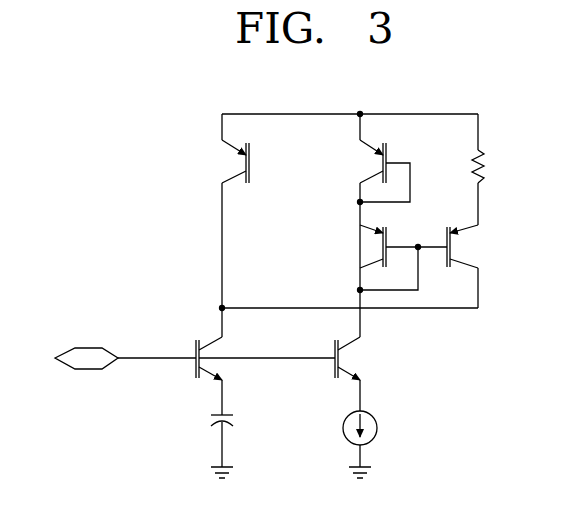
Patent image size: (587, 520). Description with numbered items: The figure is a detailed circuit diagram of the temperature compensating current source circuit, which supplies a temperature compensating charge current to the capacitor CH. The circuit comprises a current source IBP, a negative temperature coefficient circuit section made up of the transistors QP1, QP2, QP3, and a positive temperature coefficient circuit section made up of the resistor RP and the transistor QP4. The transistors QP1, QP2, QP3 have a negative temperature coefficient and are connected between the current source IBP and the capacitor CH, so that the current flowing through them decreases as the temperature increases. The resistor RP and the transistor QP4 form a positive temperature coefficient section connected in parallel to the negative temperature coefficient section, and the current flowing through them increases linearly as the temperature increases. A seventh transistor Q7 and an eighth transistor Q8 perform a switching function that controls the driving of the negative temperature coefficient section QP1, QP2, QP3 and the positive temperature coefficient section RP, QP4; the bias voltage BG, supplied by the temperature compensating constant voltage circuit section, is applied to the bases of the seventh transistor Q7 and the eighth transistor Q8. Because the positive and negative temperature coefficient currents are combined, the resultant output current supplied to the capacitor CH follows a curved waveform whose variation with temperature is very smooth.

The transistor having a negative temperature coefficient QP1 is at (224, 148).
The transistor having a negative temperature coefficient QP2 is at (372, 158).
The transistor having a negative temperature coefficient QP3 is at (391, 257).
The transistor having a positive temperature coefficient QP4 is at (480, 246).
The resistor RP is at (493, 169).
The bias voltage BG is at (109, 359).
The seventh transistor Q7 is at (265, 375).
The eighth transistor Q8 is at (361, 374).
The capacitor CH is at (238, 446).
The current source IBP is at (377, 444).